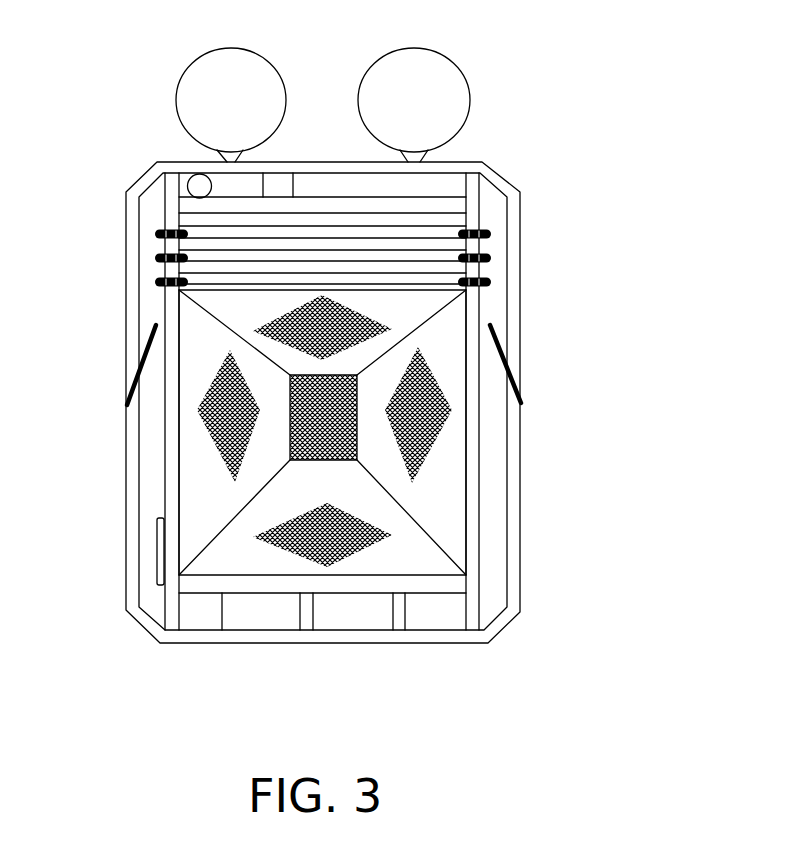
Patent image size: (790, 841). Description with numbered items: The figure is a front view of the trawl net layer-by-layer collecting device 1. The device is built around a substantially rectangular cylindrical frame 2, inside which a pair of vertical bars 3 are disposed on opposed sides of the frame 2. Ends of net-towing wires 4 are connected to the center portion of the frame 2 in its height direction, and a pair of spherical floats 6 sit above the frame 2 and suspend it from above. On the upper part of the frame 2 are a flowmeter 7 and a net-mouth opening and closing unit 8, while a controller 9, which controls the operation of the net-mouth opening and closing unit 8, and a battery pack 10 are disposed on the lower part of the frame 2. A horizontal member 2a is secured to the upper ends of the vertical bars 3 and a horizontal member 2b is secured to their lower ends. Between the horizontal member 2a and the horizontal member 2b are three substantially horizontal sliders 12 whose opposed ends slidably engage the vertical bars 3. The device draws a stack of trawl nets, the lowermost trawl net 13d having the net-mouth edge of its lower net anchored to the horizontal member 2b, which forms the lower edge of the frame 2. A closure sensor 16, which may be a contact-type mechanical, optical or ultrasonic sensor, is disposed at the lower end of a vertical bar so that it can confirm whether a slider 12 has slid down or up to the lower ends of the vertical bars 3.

The trawl net layer-by-layer collecting device 1 is at (602, 58).
The cylindrical frame 2 is at (502, 181).
The horizontal member 2a is at (353, 207).
The horizontal member 2b is at (432, 588).
The vertical bars 3 is at (168, 300).
The net-towing wires 4 is at (146, 337).
The floats 6 is at (231, 63).
The flowmeter 7 is at (200, 183).
The net-mouth opening and closing unit 8 is at (277, 182).
The controller 9 is at (260, 617).
The battery pack 10 is at (357, 617).
The sliders 12 is at (350, 283).
The trawl net 13d is at (447, 460).
The closure sensor 16 is at (155, 537).